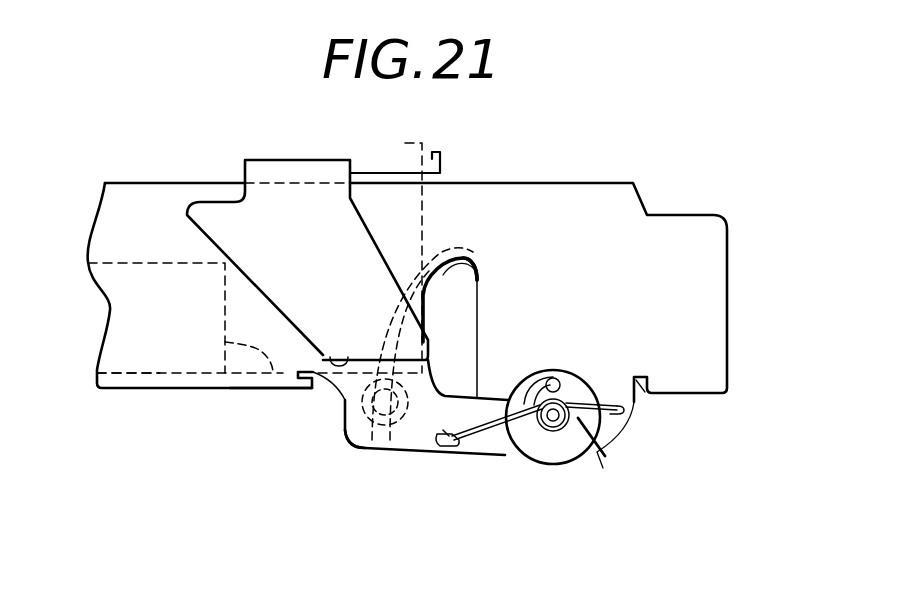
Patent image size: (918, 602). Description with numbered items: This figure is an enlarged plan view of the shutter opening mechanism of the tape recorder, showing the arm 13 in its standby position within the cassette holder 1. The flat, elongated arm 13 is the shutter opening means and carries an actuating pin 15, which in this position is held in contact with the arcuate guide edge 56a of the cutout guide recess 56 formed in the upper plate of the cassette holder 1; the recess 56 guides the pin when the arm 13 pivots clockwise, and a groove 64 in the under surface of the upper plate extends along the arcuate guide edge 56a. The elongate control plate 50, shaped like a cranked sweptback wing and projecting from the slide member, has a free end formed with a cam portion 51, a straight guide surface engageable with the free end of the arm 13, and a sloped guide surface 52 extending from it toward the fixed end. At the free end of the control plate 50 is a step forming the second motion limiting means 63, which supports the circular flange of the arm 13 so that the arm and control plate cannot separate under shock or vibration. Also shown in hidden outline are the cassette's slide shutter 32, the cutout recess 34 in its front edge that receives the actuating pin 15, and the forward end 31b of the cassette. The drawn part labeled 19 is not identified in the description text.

The cassette holder 1 is at (710, 317).
The arm 13 is at (415, 444).
The actuating pin 15 is at (390, 430).
The spring 19 is at (593, 442).
The forward end 31b is at (423, 220).
The slide shutter 32 is at (123, 367).
The cutout recess 34 is at (240, 360).
The control plate 50 is at (215, 222).
The cam portion 51 is at (352, 358).
The sloped guide surface 52 is at (283, 390).
The cutout guide recess 56 is at (464, 327).
The arcuate guide edge 56a is at (478, 280).
The second motion limiting means 63 is at (335, 380).
The recess 64 is at (363, 448).